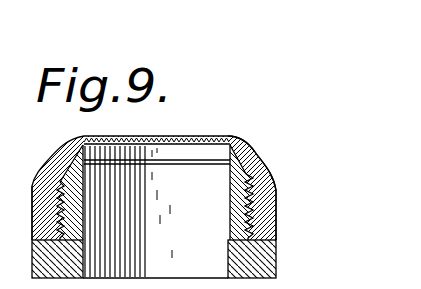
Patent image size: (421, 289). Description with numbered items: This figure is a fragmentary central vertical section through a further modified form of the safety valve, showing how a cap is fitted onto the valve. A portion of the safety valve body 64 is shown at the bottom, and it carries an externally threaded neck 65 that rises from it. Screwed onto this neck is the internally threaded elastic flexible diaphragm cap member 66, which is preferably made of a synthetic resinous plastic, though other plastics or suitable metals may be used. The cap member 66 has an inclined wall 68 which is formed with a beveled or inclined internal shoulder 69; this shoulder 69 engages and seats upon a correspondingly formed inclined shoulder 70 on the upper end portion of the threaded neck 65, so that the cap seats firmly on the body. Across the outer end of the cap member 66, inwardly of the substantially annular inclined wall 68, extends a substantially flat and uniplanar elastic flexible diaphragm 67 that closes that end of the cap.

The safety valve body 64 is at (279, 263).
The externally threaded neck 65 is at (238, 224).
The elastic flexible diaphragm cap member 66 is at (277, 202).
The elastic flexible diaphragm 67 is at (188, 125).
The inclined wall 68 is at (249, 148).
The beveled internal shoulder 69 is at (267, 171).
The inclined shoulder 70 is at (250, 187).